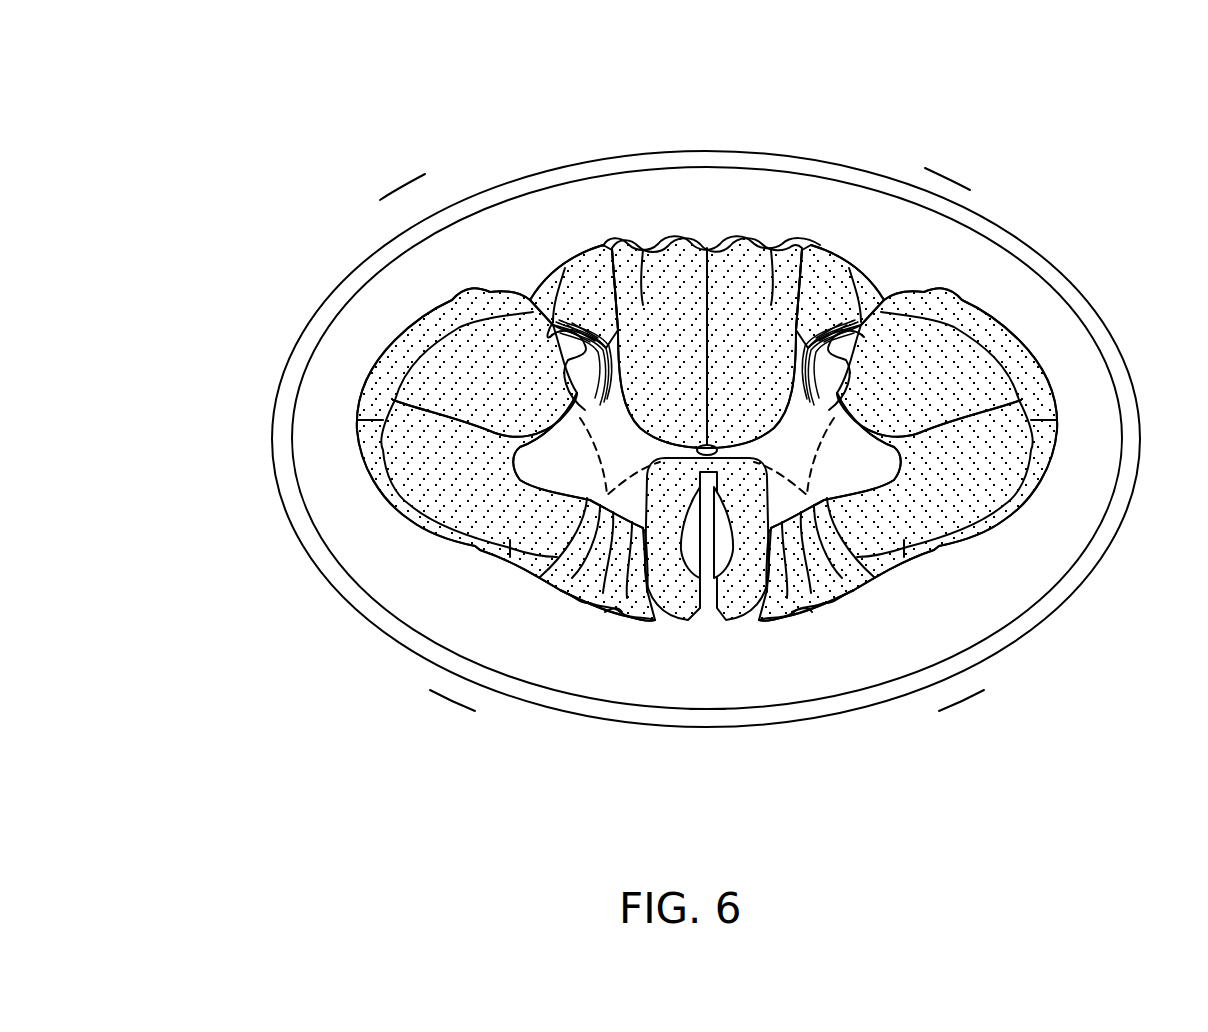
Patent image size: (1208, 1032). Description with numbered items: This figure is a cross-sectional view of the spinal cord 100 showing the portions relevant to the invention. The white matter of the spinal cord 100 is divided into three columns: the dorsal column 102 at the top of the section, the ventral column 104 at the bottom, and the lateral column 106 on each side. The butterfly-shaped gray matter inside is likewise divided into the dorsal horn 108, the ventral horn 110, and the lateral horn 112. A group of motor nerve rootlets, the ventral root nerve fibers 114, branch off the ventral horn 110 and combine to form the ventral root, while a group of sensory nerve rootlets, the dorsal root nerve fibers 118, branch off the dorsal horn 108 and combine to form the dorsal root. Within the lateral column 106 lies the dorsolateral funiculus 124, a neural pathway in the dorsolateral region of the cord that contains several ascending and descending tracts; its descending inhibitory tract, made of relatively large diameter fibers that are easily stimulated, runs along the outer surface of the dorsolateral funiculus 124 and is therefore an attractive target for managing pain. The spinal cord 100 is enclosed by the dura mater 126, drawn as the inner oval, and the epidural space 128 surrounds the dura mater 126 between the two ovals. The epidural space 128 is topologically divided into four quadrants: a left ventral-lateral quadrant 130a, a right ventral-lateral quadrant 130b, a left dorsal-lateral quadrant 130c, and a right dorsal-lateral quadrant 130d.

The spinal cord 100 is at (667, 200).
The dorsal column 102 is at (782, 248).
The ventral column 104 is at (757, 603).
The lateral column 106 is at (457, 393).
The dorsal horn 108 is at (583, 320).
The ventral horn 110 is at (550, 470).
The lateral horn 112 is at (862, 455).
The ventral root nerve fibers 114 is at (640, 605).
The dorsal root nerve fibers 118 is at (612, 340).
The dorsolateral funiculus 124 is at (463, 343).
The dura mater 126 is at (640, 727).
The epidural space 128 is at (455, 162).
The left ventral-lateral quadrant 130a is at (447, 712).
The right ventral-lateral quadrant 130b is at (1025, 712).
The left dorsal-lateral quadrant 130c is at (396, 190).
The right dorsal-lateral quadrant 130d is at (940, 155).